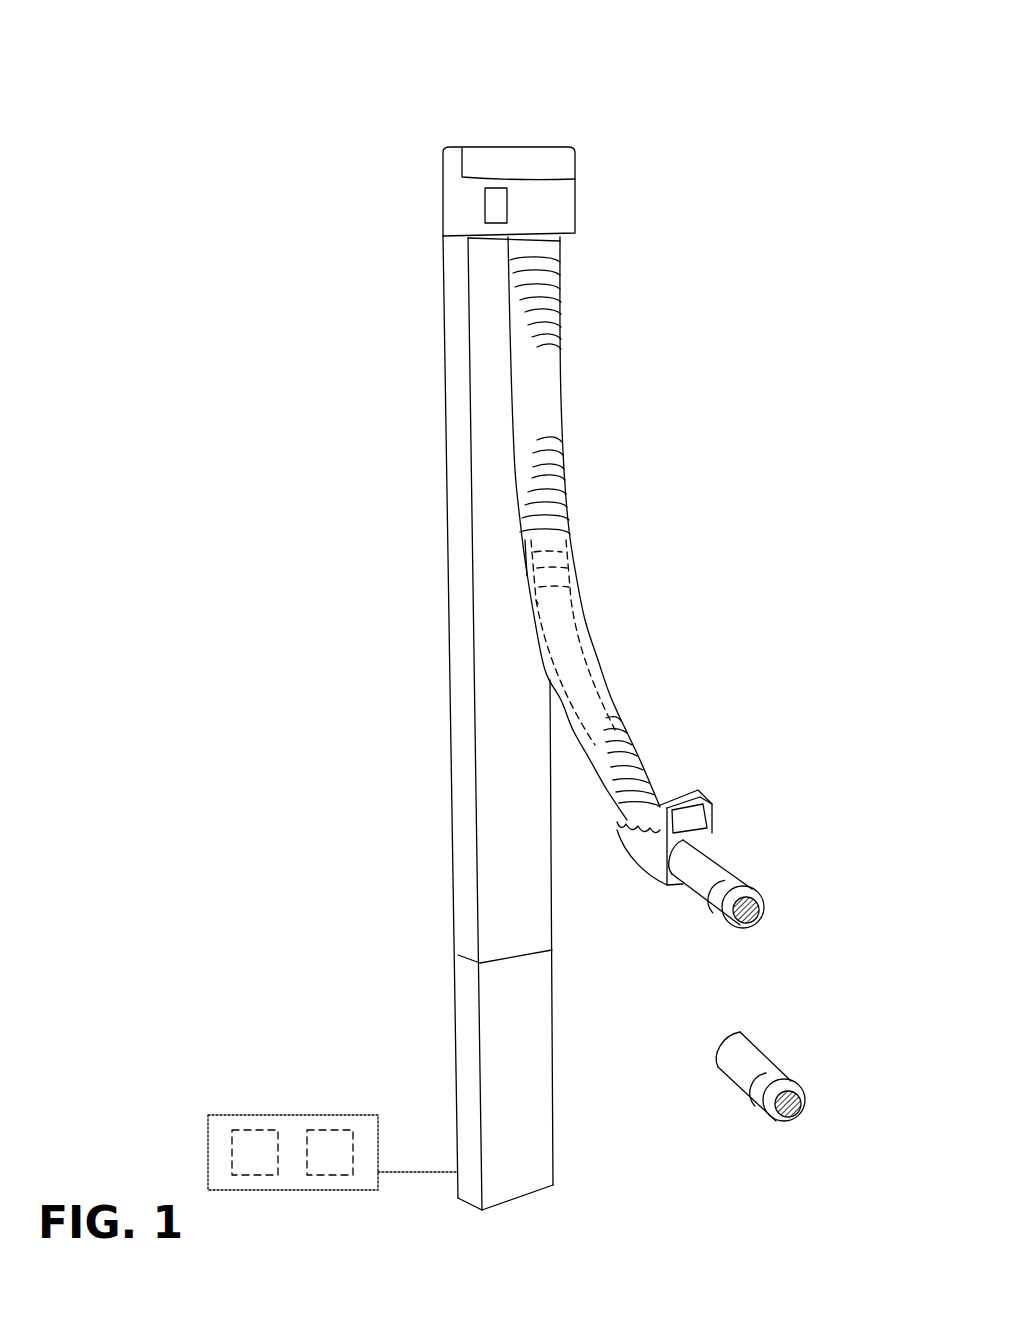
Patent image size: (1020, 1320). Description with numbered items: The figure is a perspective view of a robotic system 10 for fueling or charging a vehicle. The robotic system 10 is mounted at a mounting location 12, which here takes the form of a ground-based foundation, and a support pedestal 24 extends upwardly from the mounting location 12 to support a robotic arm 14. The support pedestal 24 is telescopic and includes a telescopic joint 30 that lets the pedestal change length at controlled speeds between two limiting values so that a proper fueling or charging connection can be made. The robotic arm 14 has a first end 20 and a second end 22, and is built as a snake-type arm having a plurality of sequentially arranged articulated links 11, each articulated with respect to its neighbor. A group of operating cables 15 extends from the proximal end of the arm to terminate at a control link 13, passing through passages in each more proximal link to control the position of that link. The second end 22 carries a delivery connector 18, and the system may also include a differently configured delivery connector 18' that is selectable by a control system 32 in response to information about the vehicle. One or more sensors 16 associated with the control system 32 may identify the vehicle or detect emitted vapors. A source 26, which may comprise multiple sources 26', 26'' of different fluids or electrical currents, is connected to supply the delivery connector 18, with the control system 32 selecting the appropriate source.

The robotic system 10 is at (430, 689).
The articulated links 11 is at (566, 546).
The mounting location 12 is at (540, 1190).
The control link 13 is at (652, 790).
The robotic arm 14 is at (575, 592).
The operating cables 15 is at (598, 648).
The sensor 16 is at (576, 166).
The delivery connector 18 is at (752, 870).
The delivery connector 18' is at (760, 1057).
The first end 20 is at (543, 247).
The second end 22 is at (667, 886).
The support pedestal 24 is at (455, 892).
The source 26 is at (311, 1113).
The source 26' is at (245, 1115).
The source 26'' is at (319, 1115).
The telescopic joint 30 is at (566, 956).
The control system 32 is at (556, 112).